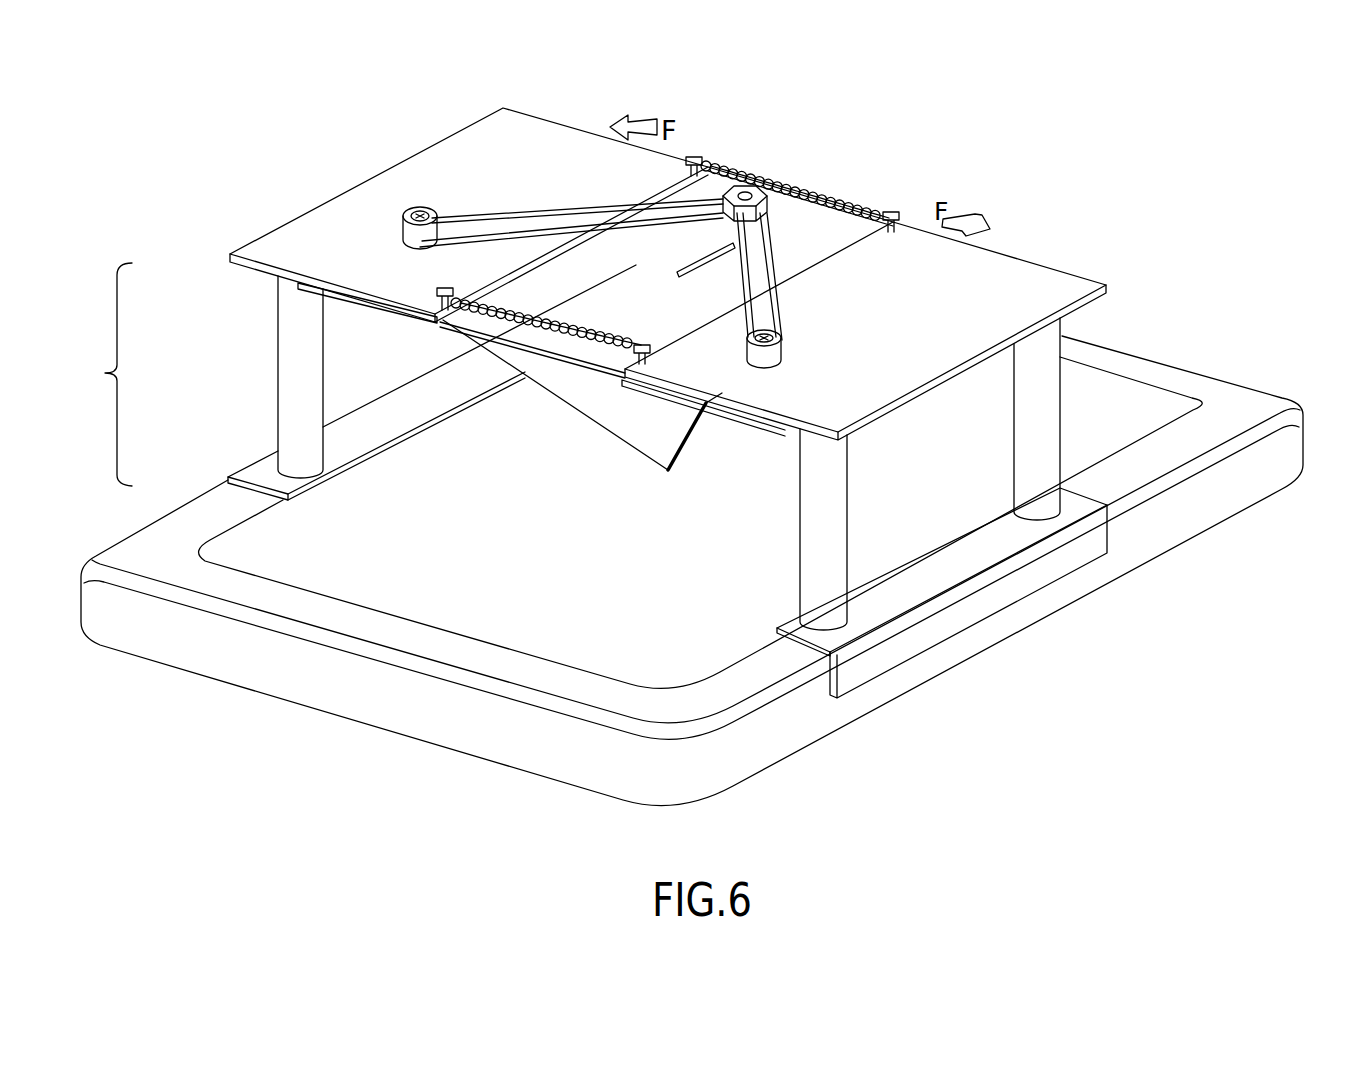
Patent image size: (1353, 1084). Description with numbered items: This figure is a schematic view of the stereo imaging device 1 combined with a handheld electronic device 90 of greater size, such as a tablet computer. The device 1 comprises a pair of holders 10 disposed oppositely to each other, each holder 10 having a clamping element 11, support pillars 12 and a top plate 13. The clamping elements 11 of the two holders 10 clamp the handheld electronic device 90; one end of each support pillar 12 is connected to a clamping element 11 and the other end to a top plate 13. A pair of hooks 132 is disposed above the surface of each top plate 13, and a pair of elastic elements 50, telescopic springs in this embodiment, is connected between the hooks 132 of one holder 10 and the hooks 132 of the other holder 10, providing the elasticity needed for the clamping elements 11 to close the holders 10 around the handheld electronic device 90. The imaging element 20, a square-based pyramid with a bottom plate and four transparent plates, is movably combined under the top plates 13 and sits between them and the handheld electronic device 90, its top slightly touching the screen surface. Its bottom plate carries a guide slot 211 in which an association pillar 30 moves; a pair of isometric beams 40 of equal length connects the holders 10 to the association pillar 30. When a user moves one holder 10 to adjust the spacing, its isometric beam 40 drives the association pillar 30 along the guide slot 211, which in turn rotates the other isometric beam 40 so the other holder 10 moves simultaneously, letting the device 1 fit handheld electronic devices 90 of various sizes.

The stereo imaging device 1 is at (1078, 169).
The holder 10 is at (104, 374).
The clamping element 11 is at (228, 487).
The support pillar 12 is at (283, 374).
The top plate 13 is at (228, 256).
The hook 132 is at (694, 150).
The imaging element 20 is at (625, 432).
The guide slot 211 is at (683, 276).
The association pillar 30 is at (750, 185).
The isometric beam 40 is at (500, 218).
The elastic element 50 is at (818, 195).
The handheld electronic device 90 is at (313, 688).